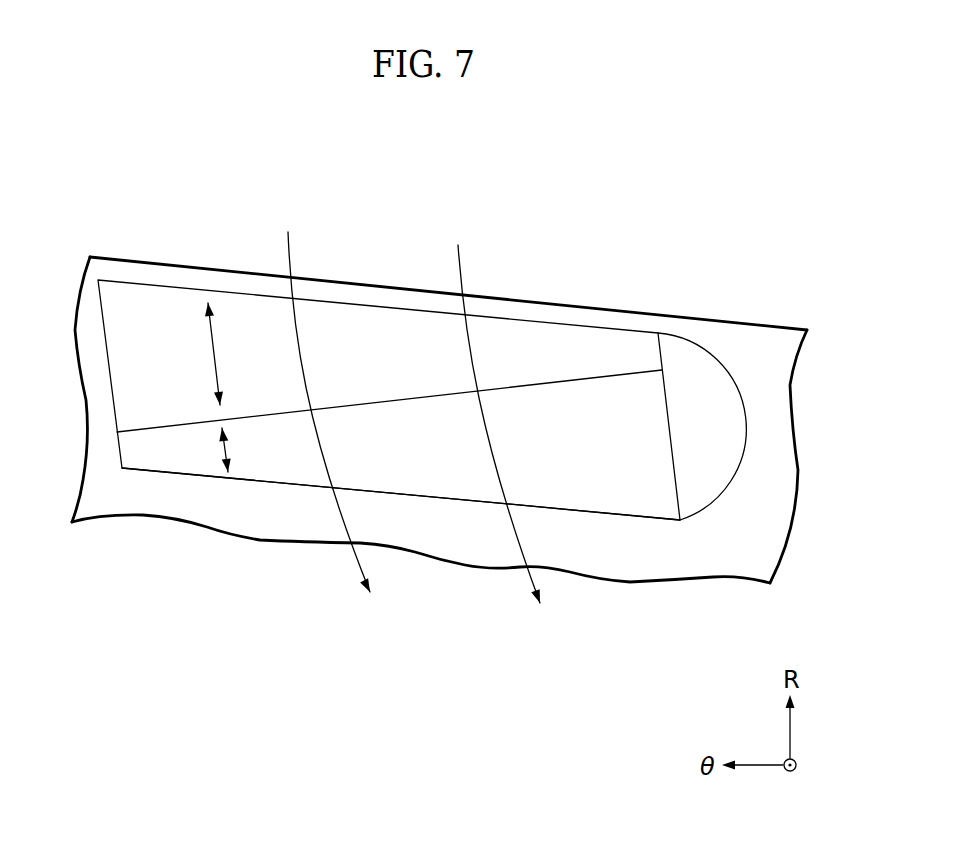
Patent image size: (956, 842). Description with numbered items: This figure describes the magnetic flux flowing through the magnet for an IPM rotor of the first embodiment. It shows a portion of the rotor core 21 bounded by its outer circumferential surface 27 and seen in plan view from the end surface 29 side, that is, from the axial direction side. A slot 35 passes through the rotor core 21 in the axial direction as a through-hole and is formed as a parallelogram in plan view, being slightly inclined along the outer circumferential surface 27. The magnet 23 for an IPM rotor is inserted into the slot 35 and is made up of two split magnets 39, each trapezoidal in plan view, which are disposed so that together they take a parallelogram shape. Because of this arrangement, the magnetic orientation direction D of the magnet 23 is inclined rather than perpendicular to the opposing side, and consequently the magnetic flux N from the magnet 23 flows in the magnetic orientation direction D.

The rotor core 21 is at (627, 596).
The magnet for an IPM rotor 23 is at (422, 344).
The outer circumferential surface 27 is at (194, 267).
The end surface 29 is at (715, 547).
The slot 35 is at (186, 474).
The split magnet 39 is at (607, 343).
The magnetic orientation direction D is at (212, 353).
The magnetic flux N is at (462, 267).